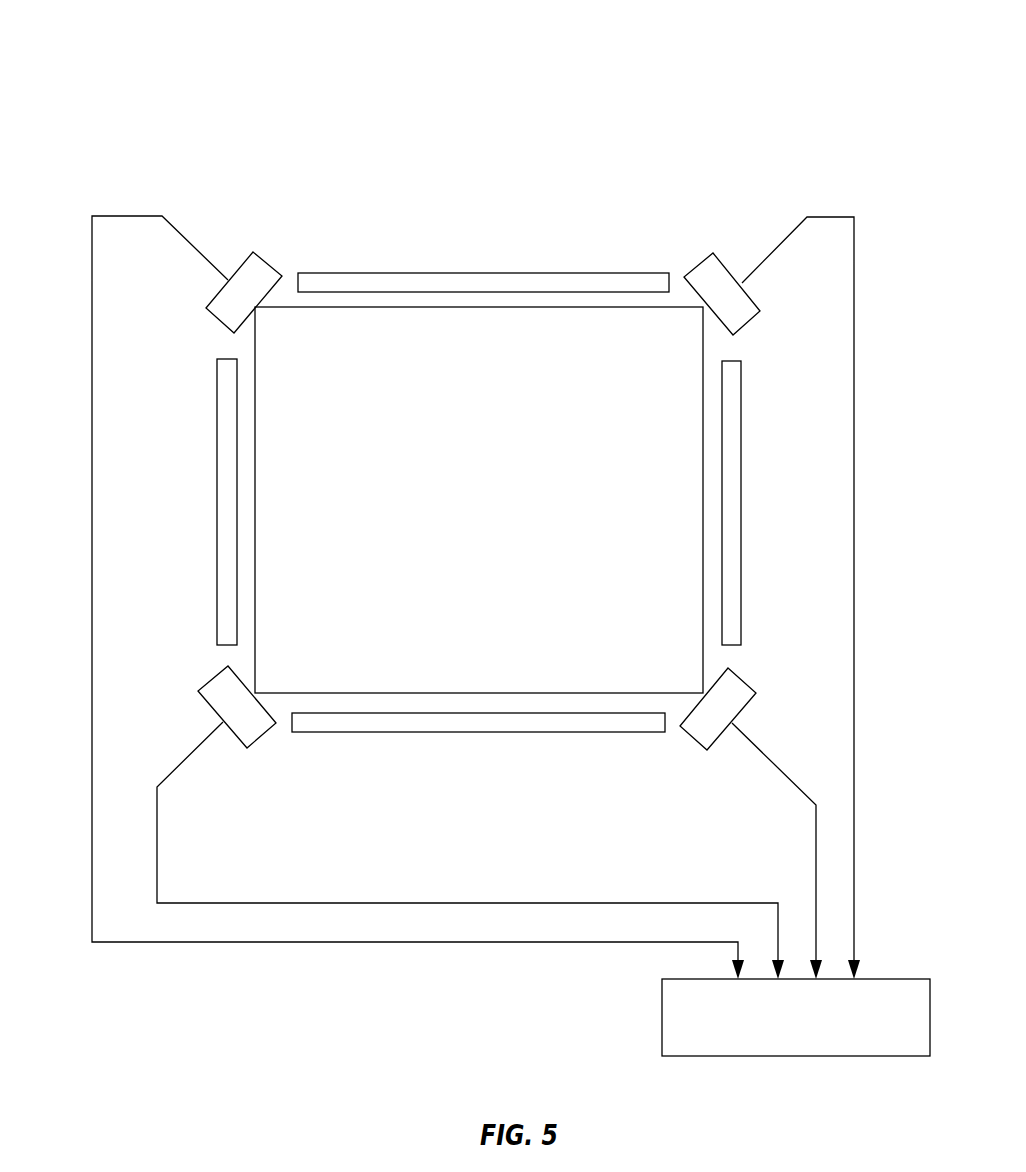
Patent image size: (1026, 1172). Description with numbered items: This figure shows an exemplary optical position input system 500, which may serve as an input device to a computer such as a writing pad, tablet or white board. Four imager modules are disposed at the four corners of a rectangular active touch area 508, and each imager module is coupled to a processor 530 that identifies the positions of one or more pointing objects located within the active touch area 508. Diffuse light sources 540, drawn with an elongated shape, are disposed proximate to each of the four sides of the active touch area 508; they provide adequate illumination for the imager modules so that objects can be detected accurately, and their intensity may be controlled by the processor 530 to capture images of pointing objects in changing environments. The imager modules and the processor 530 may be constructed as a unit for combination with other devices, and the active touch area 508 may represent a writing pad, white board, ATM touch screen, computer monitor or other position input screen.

The optical position input system 500 is at (96, 40).
The active touch area 508 is at (570, 590).
The processor 530 is at (817, 1027).
The diffuse light source 540 is at (438, 272).